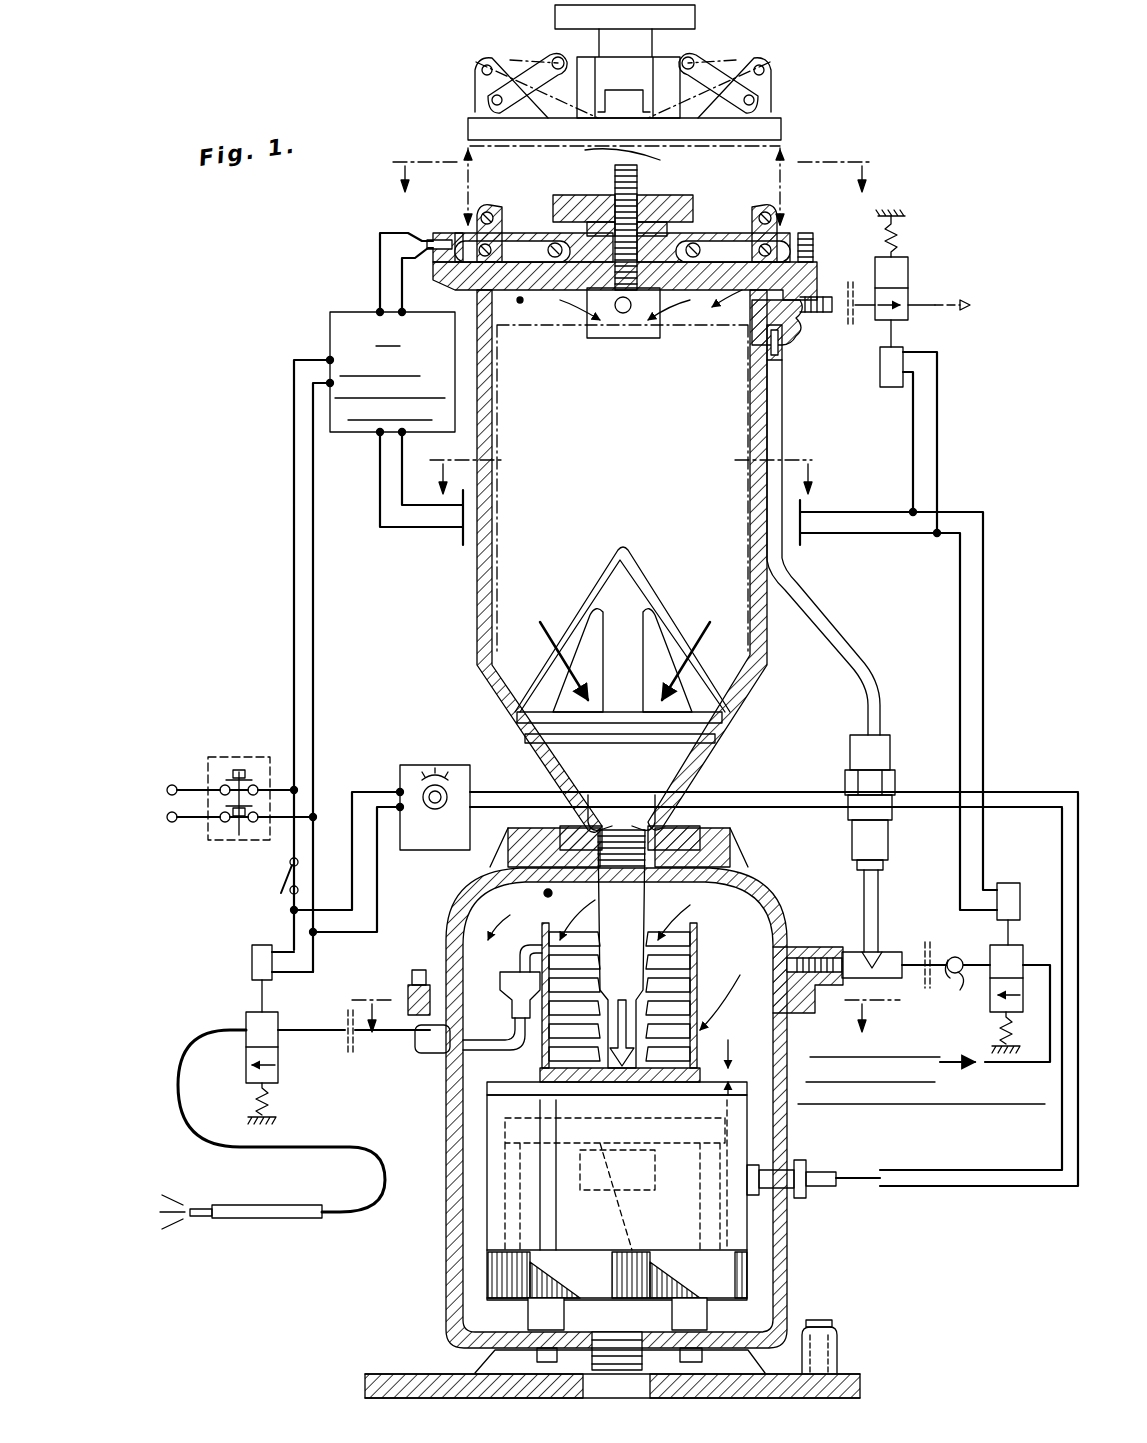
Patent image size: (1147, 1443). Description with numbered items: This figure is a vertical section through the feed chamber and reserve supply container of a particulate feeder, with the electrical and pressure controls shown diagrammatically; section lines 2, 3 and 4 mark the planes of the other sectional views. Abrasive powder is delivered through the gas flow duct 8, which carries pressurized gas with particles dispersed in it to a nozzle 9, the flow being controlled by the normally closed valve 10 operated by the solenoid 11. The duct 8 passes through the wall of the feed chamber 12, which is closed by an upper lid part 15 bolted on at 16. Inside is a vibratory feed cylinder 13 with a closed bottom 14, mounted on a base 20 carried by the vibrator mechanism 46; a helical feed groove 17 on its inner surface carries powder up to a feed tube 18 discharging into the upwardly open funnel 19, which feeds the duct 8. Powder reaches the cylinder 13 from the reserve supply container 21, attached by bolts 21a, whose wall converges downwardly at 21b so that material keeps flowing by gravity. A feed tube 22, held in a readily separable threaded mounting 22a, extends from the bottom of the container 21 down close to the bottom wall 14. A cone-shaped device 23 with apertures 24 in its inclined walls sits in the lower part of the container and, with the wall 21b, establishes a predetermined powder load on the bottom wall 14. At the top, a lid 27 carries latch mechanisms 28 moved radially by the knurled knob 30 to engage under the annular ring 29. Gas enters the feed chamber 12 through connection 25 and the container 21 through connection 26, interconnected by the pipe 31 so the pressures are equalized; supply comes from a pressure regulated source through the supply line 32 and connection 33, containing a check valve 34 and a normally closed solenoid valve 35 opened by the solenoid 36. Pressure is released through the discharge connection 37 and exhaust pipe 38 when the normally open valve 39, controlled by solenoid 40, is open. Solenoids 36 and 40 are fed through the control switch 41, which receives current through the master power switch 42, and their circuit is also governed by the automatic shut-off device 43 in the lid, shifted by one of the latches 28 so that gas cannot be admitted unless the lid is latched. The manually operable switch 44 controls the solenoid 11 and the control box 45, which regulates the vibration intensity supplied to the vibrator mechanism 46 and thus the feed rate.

The section line 2- 2 is at (633, 160).
The section line 3- 3 is at (626, 463).
The section line 4- 4 is at (625, 1003).
The gas flow duct 8 is at (328, 1036).
The nozzle 9 is at (276, 1220).
The normally closed valve 10 is at (246, 1016).
The solenoid 11 is at (258, 942).
The feed chamber 12 is at (450, 1128).
The cylinder 13 is at (735, 920).
The bottom wall 14 is at (540, 1076).
The upper lid part 15 is at (482, 892).
The bolts 16 is at (418, 972).
The helical feed groove 17 is at (698, 972).
The feed tube 18 is at (548, 945).
The funnel 19 is at (500, 992).
The base 20 is at (725, 1090).
The reserve supply container 21 is at (480, 580).
The bolts 21a is at (562, 822).
The converging wall portion 21b is at (712, 768).
The feed tube 22 is at (638, 908).
The threaded mounting 22a is at (618, 800).
The cone-shaped device 23 is at (640, 572).
The apertures 24 is at (582, 628).
The pressure connection 25 is at (836, 962).
The pressure connection 26 is at (745, 318).
The lid 27 is at (576, 298).
The latch mechanisms 28 is at (522, 62).
The annular ring 29 is at (804, 234).
The knurled knob 30 is at (698, 26).
The pipe 31 is at (840, 640).
The supply line 32 is at (988, 1060).
The connection 33 is at (958, 957).
The check valve 34 is at (962, 978).
The solenoid control valve 35 is at (1024, 956).
The solenoid 36 is at (1005, 882).
The discharge connection 37 is at (835, 294).
The exhaust pipe 38 is at (955, 300).
The valve 39 is at (910, 264).
The solenoid 40 is at (890, 388).
The control switch 41 is at (385, 641).
The master power switch 42 is at (230, 755).
The automatic shut-off device 43 is at (442, 232).
The manually operable switch 44 is at (280, 878).
The control box 45 is at (418, 768).
The vibrator mechanism 46 is at (740, 1215).